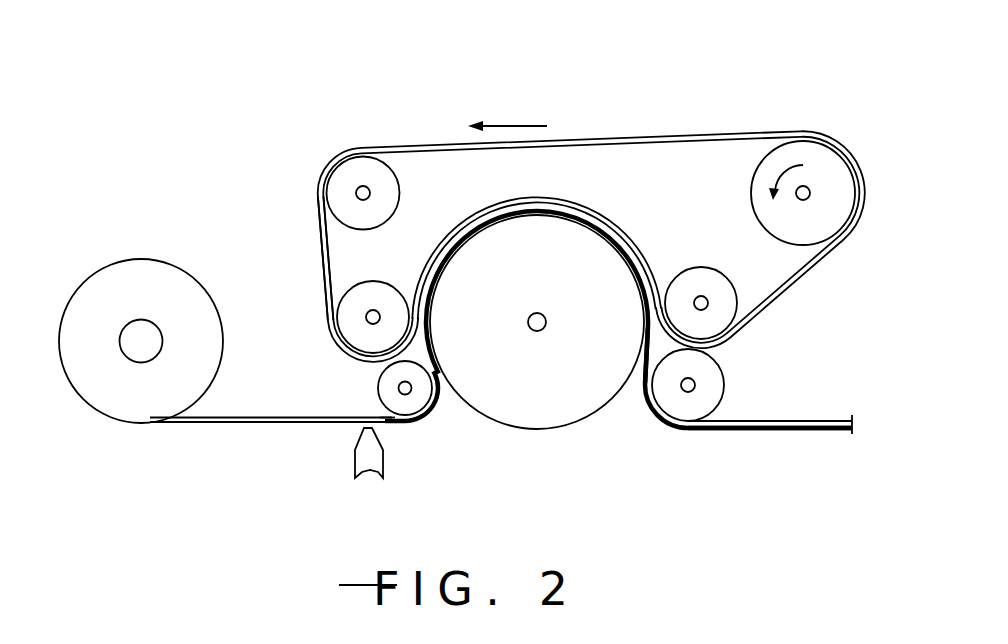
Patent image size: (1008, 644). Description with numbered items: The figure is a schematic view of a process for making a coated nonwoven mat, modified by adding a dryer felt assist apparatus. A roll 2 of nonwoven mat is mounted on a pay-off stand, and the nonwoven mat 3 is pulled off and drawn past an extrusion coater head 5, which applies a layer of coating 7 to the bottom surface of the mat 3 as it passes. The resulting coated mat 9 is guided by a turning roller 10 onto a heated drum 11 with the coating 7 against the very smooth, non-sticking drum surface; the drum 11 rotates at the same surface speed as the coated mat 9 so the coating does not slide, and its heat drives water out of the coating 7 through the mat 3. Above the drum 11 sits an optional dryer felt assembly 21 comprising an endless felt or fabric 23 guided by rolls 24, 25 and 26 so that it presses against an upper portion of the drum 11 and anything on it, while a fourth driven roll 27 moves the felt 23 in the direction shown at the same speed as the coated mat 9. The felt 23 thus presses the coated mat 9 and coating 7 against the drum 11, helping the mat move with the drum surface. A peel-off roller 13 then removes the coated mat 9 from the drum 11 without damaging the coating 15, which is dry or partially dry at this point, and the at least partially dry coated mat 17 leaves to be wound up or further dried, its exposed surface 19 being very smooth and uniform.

The roll of nonwoven mat 2 is at (200, 283).
The nonwoven mat 3 is at (256, 418).
The extrusion coater head 5 is at (357, 458).
The coating 7 is at (400, 426).
The coated mat 9 is at (387, 418).
The turning roller 10 is at (391, 383).
The drum 11 is at (598, 268).
The peel-off roller 13 is at (713, 392).
The at least partially dry coating 15 is at (645, 377).
The at least partially dry coated mat 17 is at (740, 430).
The exposed surface of the coating 19 is at (800, 430).
The dryer felt assembly 21 is at (402, 148).
The endless felt or fabric 23 is at (322, 236).
The felt guide roll 24 is at (374, 298).
The felt guide roll 25 is at (708, 285).
The felt guide roll 26 is at (385, 184).
The driven roll 27 is at (833, 188).